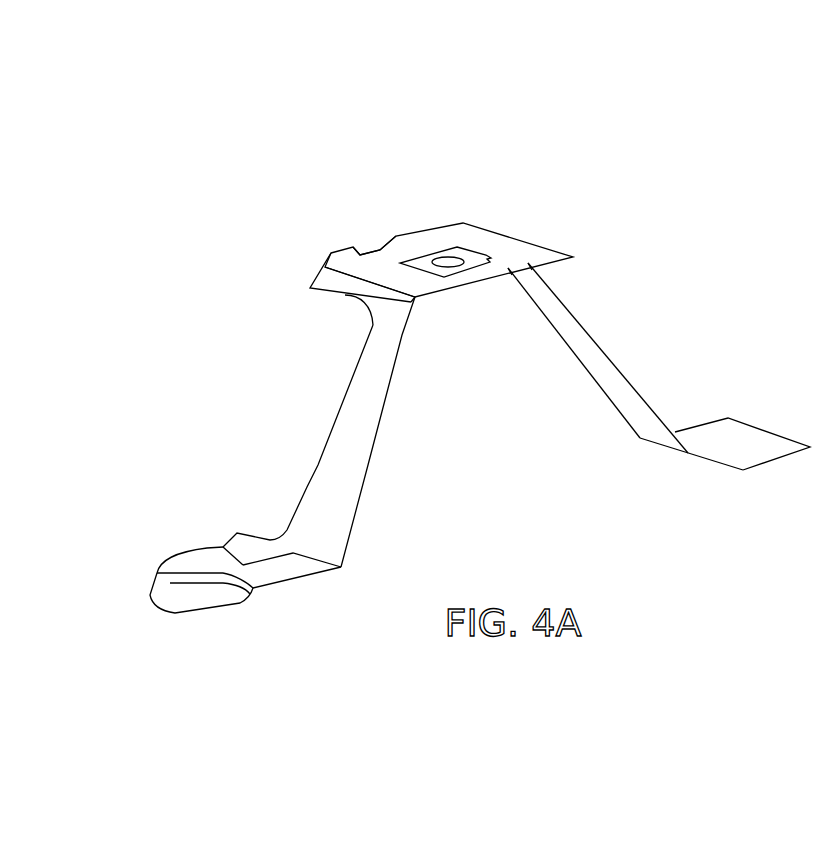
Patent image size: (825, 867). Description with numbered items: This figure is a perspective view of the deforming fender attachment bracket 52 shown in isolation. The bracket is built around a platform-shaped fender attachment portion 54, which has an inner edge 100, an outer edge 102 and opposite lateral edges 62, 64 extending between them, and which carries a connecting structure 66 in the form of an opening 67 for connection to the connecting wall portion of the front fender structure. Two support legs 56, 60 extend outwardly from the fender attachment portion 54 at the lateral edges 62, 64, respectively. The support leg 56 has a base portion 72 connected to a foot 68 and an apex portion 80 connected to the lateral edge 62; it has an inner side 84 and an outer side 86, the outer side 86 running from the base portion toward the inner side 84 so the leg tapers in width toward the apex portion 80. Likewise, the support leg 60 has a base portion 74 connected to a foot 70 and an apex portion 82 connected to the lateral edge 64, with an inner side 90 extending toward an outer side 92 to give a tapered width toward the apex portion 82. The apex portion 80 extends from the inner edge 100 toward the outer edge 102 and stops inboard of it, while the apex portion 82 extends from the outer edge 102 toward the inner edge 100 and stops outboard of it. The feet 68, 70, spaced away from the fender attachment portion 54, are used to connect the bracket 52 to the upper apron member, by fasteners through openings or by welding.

The deforming fender attachment bracket 52 is at (487, 336).
The fender attachment portion 54 is at (425, 200).
The support leg 56 is at (307, 454).
The support leg 60 is at (666, 345).
The lateral edge 62 is at (350, 291).
The lateral edge 64 is at (503, 233).
The connecting structure 66 is at (440, 215).
The opening 67 is at (472, 262).
The foot 68 is at (283, 573).
The foot 70 is at (772, 452).
The base portion 72 is at (344, 432).
The base portion 74 is at (644, 472).
The apex portion 80 is at (296, 346).
The apex portion 82 is at (582, 231).
The inner side 84 is at (382, 422).
The outer side 86 is at (310, 483).
The inner side 90 is at (586, 325).
The outer side 92 is at (582, 364).
The inner edge 100 is at (452, 287).
The outer edge 102 is at (383, 245).